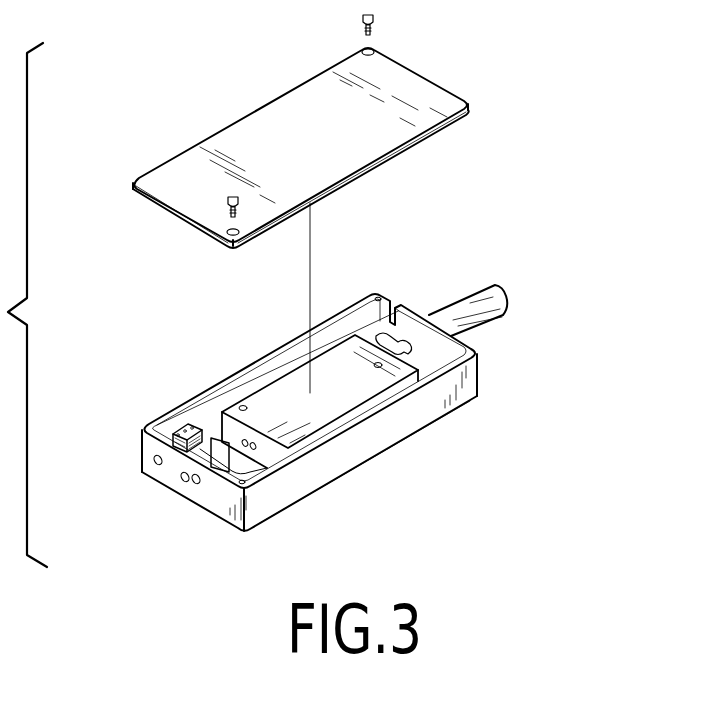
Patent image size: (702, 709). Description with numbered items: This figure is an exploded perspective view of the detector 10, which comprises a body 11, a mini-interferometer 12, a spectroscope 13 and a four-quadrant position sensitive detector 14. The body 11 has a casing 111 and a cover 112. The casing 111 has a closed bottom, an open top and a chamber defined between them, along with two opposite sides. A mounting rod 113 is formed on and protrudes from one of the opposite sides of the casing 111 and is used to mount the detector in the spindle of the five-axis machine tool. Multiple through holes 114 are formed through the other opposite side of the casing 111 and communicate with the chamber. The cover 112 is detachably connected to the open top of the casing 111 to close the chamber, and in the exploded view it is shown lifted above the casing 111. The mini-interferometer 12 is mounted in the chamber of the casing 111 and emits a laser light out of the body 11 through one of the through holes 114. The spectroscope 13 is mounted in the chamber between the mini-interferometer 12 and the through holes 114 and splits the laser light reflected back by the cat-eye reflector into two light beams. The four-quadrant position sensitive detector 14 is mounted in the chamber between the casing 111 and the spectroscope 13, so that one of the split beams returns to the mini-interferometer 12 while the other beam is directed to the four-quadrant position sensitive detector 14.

The detector 10 is at (418, 277).
The body 11 is at (417, 440).
The casing 111 is at (322, 477).
The cover 112 is at (388, 140).
The mounting rod 113 is at (483, 327).
The through holes 114 is at (197, 484).
The mini-interferometer 12 is at (343, 358).
The spectroscope 13 is at (218, 440).
The four-quadrant position sensitive detector 14 is at (185, 432).